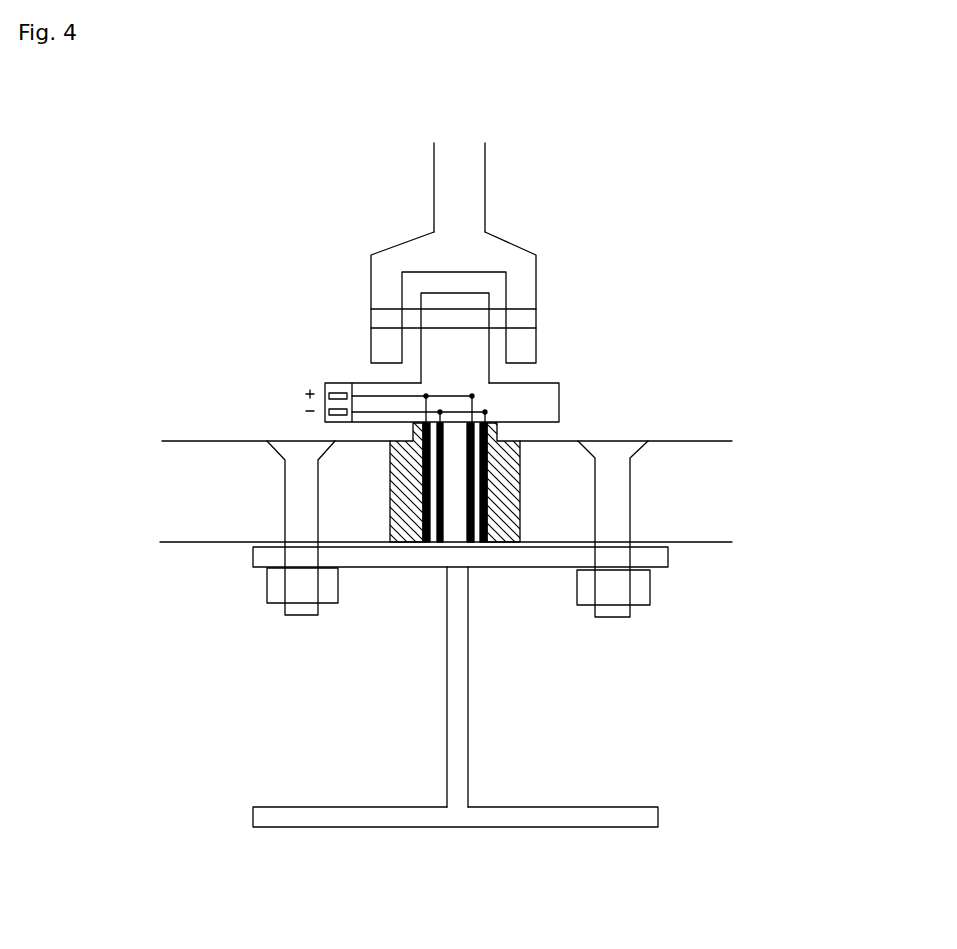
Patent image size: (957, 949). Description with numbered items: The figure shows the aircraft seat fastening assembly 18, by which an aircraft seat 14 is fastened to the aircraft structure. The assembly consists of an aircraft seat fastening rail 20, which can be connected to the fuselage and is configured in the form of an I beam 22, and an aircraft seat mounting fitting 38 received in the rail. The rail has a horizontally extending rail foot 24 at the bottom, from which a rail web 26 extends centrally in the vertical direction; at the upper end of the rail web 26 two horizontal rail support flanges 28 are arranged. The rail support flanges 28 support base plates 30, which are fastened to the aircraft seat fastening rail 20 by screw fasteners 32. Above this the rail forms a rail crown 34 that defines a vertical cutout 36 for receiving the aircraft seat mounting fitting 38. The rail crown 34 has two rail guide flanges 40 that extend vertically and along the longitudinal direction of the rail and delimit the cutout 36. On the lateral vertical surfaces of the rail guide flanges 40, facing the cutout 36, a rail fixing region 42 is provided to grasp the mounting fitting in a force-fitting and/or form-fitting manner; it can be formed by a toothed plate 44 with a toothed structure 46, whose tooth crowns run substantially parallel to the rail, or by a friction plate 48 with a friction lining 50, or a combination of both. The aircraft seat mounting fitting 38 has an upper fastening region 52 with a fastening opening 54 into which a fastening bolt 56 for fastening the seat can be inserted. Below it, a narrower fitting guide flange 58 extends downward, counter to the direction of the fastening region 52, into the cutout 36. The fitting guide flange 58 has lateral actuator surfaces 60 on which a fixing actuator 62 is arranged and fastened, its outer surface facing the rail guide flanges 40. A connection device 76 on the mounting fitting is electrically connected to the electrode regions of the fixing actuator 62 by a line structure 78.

The aircraft seat 14 is at (442, 167).
The aircraft seat fastening assembly 18 is at (290, 204).
The aircraft seat fastening rail 20 is at (350, 858).
The I beam 22 is at (312, 715).
The rail foot 24 is at (337, 817).
The rail web 26 is at (458, 738).
The rail support flange 28 is at (410, 557).
The base plate 30 is at (222, 458).
The screw fastener 32 is at (615, 512).
The rail crown 34 is at (563, 432).
The cutout 36 is at (443, 545).
The aircraft seat mounting fitting 38 is at (550, 382).
The rail guide flange 40 is at (508, 465).
The rail fixing region 42 is at (440, 482).
The toothed plate 44 is at (470, 482).
The toothed structure 46 is at (483, 482).
The friction plate 48 is at (393, 478).
The friction lining 50 is at (395, 512).
The fastening region 52 is at (525, 225).
The fastening opening 54 is at (445, 308).
The fastening bolt 56 is at (518, 320).
The fitting guide flange 58 is at (455, 437).
The lateral actuator surface 60 is at (470, 506).
The fixing actuator 62 is at (475, 487).
The connection device 76 is at (332, 381).
The line structure 78 is at (375, 393).